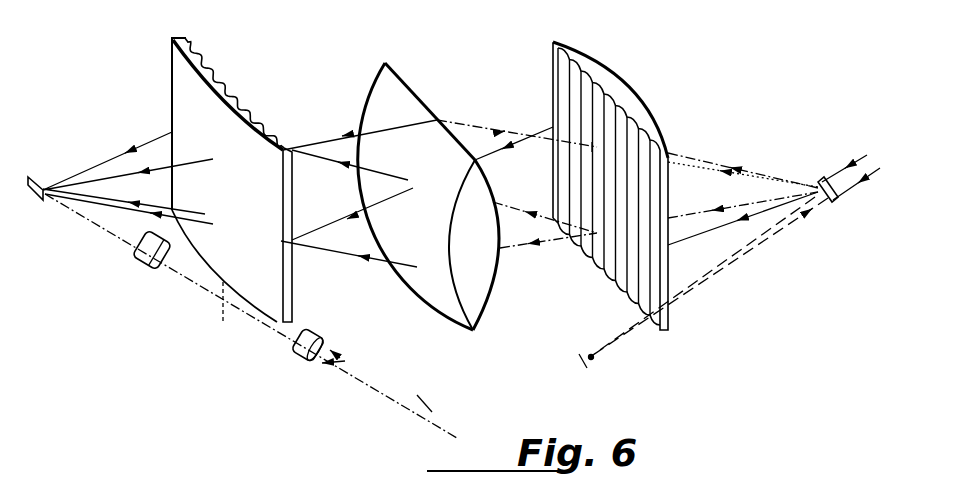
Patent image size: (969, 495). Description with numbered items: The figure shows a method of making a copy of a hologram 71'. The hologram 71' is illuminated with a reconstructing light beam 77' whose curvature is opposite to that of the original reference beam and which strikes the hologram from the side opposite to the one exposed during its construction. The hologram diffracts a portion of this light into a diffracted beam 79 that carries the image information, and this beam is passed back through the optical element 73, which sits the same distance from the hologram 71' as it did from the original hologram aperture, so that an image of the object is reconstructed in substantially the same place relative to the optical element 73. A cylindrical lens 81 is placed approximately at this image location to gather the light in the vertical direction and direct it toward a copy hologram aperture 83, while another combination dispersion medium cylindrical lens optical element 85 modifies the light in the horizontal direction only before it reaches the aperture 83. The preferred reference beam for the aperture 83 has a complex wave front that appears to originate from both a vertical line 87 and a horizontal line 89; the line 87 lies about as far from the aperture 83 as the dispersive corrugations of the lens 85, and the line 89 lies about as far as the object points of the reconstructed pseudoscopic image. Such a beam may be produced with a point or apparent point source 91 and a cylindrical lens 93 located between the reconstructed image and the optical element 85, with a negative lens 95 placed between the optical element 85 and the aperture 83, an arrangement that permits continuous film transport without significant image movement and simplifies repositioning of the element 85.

The combination dispersion medium cylindrical lens optical element 85 is at (196, 62).
The copy hologram aperture 83 is at (35, 175).
The cylindrical lens 81 is at (484, 278).
The optical element 73 is at (615, 92).
The diffracted beam 79 is at (745, 180).
The hologram 71' is at (815, 165).
The reconstructing light beam 77' is at (851, 156).
The negative lens 95 is at (140, 263).
The vertical line 87 is at (217, 320).
The cylindrical lens 93 is at (293, 352).
The point or apparent point source 91 is at (343, 361).
The horizontal line 89 is at (430, 411).